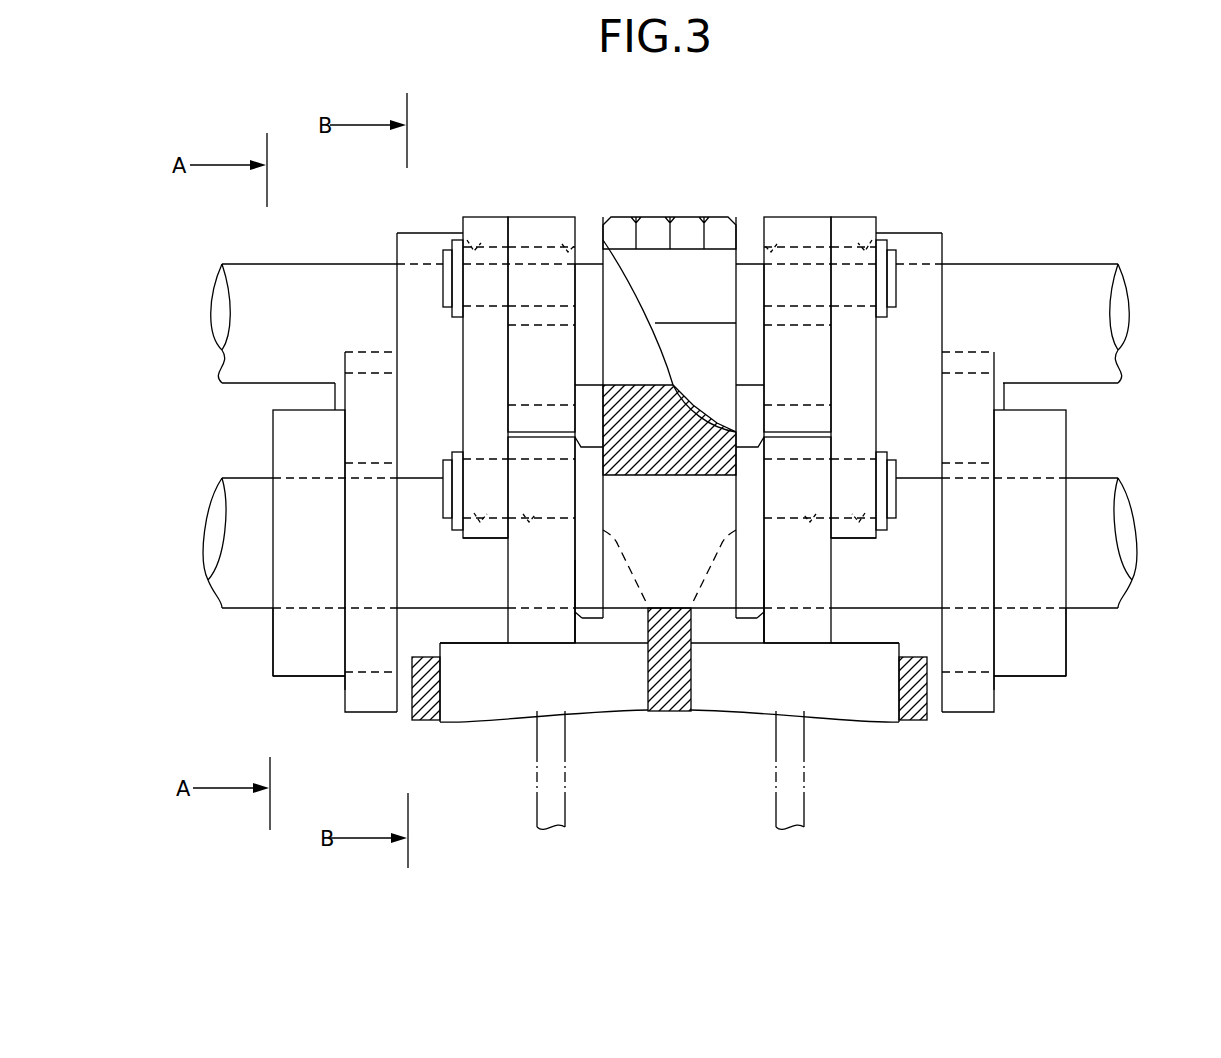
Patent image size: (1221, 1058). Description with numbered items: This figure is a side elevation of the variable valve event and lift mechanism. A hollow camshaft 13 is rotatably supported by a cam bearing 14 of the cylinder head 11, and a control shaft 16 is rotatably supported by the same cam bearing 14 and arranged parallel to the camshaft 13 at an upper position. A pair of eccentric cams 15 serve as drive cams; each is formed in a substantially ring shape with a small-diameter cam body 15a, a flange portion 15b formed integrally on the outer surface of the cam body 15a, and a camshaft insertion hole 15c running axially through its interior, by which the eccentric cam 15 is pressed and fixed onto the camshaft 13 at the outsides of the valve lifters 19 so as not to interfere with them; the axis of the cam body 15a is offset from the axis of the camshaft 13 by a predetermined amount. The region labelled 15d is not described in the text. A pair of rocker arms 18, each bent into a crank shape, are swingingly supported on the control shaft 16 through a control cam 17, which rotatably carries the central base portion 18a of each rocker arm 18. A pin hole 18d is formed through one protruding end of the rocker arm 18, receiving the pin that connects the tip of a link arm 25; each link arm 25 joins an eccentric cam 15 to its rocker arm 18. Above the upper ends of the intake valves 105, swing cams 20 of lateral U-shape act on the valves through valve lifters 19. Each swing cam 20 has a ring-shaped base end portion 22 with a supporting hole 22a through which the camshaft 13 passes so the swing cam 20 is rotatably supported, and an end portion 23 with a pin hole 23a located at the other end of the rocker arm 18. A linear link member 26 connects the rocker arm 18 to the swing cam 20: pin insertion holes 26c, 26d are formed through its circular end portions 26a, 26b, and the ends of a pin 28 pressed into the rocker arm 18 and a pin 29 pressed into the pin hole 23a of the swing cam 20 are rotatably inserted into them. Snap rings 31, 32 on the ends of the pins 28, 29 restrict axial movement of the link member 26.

The cylinder head 11 is at (430, 715).
The camshaft 13 is at (210, 580).
The cam bearing 14 is at (714, 212).
The eccentric cam 15 is at (300, 683).
The cam body 15a is at (345, 692).
The flange portion 15b is at (285, 658).
The camshaft insertion hole 15c is at (275, 636).
The bearing cap bolt hole 15d is at (370, 665).
The control shaft 16 is at (326, 272).
The control cam 17 is at (577, 320).
The rocker arm 18 is at (531, 212).
The base portion 18a is at (573, 372).
The pin hole 18d is at (568, 242).
The valve lifter 19 is at (505, 715).
The swing cam 20 is at (582, 578).
The base end portion 22 is at (607, 485).
The supporting hole 22a is at (490, 643).
The end portion 23 is at (540, 614).
The pin hole 23a is at (530, 520).
The link arm 25 is at (396, 718).
The link member 26 is at (460, 354).
The end portion 26a is at (490, 235).
The end portion 26b is at (498, 540).
The pin insertion hole 26c is at (478, 237).
The pin insertion hole 26d is at (478, 524).
The pin 28 is at (447, 250).
The pin 29 is at (447, 462).
The snap ring 31 is at (459, 240).
The snap ring 32 is at (447, 527).
The intake valve 105 is at (537, 800).